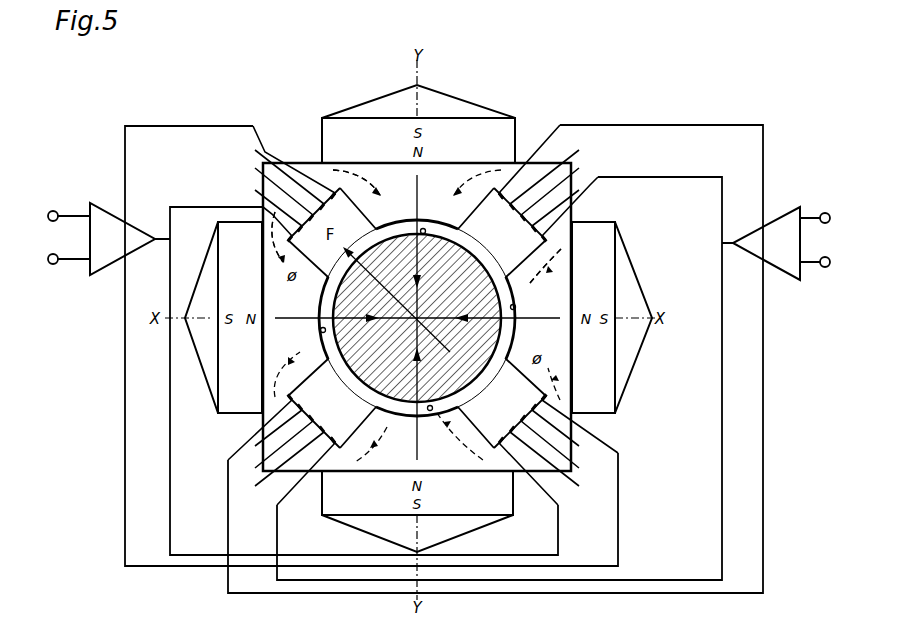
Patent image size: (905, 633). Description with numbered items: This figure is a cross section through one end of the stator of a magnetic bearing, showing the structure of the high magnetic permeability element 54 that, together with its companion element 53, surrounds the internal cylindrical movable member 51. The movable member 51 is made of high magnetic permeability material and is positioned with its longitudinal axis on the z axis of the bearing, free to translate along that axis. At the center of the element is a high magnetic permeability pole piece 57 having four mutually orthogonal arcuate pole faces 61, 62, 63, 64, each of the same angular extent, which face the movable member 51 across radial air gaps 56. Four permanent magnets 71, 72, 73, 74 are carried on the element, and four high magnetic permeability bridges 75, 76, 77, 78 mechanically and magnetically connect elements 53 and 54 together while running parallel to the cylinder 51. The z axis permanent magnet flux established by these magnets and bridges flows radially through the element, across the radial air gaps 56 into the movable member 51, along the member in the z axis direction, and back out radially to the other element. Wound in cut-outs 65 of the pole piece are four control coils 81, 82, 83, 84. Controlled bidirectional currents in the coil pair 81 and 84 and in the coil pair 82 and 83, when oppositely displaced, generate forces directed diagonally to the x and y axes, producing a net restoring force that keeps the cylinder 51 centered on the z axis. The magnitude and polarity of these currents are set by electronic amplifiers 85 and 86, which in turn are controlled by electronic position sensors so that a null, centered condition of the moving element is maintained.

The movable member 51 is at (545, 343).
The high magnetic permeability element 53 is at (402, 452).
The high magnetic permeability element 54 is at (270, 272).
The radial air gap 56 is at (280, 287).
The pole piece 57 is at (398, 180).
The arcuate pole face 61 is at (428, 220).
The arcuate pole face 62 is at (428, 410).
The arcuate pole face 63 is at (560, 301).
The arcuate pole face 64 is at (222, 357).
The cut-out 65 is at (473, 291).
The permanent magnet 71 is at (340, 128).
The permanent magnet 72 is at (540, 515).
The permanent magnet 73 is at (600, 235).
The permanent magnet 74 is at (327, 327).
The high magnetic permeability bridge 75 is at (448, 98).
The high magnetic permeability bridge 76 is at (463, 523).
The high magnetic permeability bridge 77 is at (622, 270).
The high magnetic permeability bridge 78 is at (200, 331).
The coil 81 is at (328, 195).
The coil 82 is at (576, 170).
The coil 83 is at (300, 417).
The coil 84 is at (574, 447).
The electronic amplifier 85 is at (109, 239).
The electronic amplifier 86 is at (776, 243).